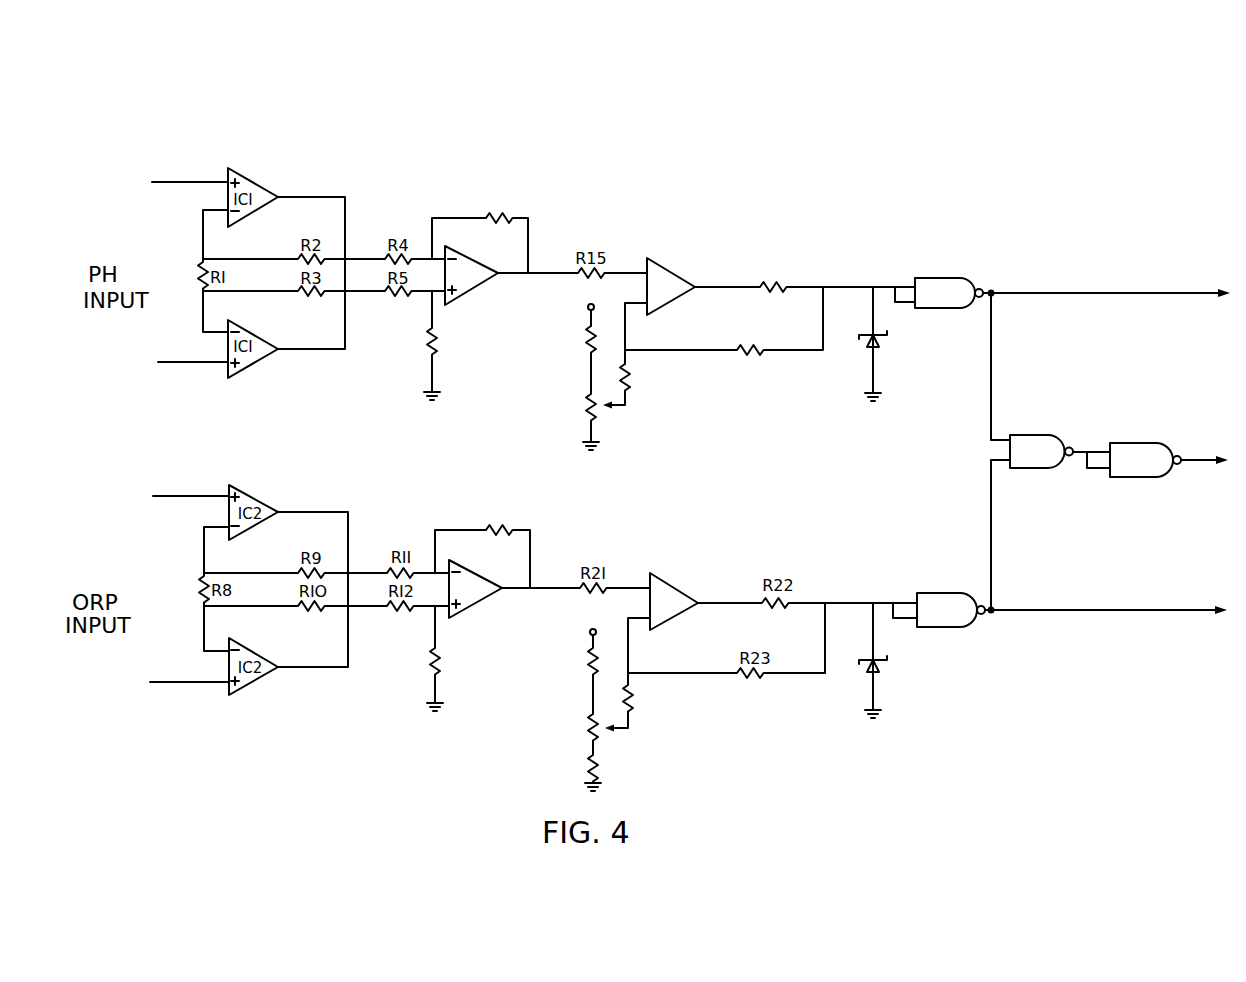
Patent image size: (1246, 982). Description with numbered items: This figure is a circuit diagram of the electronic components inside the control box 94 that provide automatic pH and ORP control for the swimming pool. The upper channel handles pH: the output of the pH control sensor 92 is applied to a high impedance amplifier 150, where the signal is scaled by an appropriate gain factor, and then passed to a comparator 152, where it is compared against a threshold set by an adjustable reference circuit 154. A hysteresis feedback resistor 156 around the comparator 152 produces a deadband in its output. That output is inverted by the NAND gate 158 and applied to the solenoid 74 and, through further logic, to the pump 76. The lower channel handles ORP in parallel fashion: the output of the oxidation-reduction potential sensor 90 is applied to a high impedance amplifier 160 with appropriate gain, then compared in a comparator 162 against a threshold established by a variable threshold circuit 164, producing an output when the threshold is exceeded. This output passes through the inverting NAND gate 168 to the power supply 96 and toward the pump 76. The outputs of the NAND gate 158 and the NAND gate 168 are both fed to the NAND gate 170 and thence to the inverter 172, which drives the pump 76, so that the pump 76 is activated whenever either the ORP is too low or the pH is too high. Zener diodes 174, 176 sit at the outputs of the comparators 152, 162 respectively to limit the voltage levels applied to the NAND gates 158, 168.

The oxidation-reduction potential (ORP) sensor 90 is at (181, 495).
The pH control sensor 92 is at (186, 364).
The control box 94 is at (775, 250).
The high impedance amplifier 150 is at (548, 210).
The comparator 152 is at (667, 260).
The adjustable reference circuit 154 is at (640, 397).
The hysteresis feedback resistor 156 is at (758, 353).
The NAND gate 158 is at (945, 278).
The high impedance amplifier 160 is at (541, 558).
The comparator 162 is at (692, 573).
The variable threshold circuit 164 is at (643, 723).
The inverting NAND gate 168 is at (970, 628).
The NAND gate 170 is at (1032, 435).
The inverter 172 is at (1152, 478).
The zener diode 174 is at (878, 344).
The zener diode 176 is at (880, 666).
The solenoid 74 is at (1106, 268).
The pump 76 is at (1185, 439).
The power supply 96 is at (1113, 588).